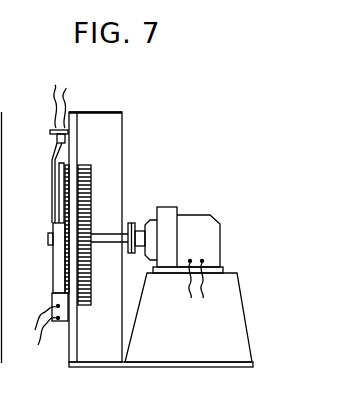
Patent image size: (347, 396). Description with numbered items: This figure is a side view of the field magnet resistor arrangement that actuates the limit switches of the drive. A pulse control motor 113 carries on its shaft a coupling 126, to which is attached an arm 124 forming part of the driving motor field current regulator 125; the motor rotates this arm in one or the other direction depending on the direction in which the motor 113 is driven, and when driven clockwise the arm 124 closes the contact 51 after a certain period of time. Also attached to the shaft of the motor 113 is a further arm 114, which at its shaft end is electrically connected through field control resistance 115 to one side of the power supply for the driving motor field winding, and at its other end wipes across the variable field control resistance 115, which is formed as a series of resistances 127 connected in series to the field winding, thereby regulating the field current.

The limit switch contact 51 is at (59, 322).
The pulse control motor 113 is at (198, 222).
The arm 114 is at (60, 192).
The field control resistance 115 is at (91, 207).
The arm 124 is at (52, 158).
The driving motor field current regulator 125 is at (95, 237).
The coupling 126 is at (130, 222).
The resistances 127 is at (64, 270).